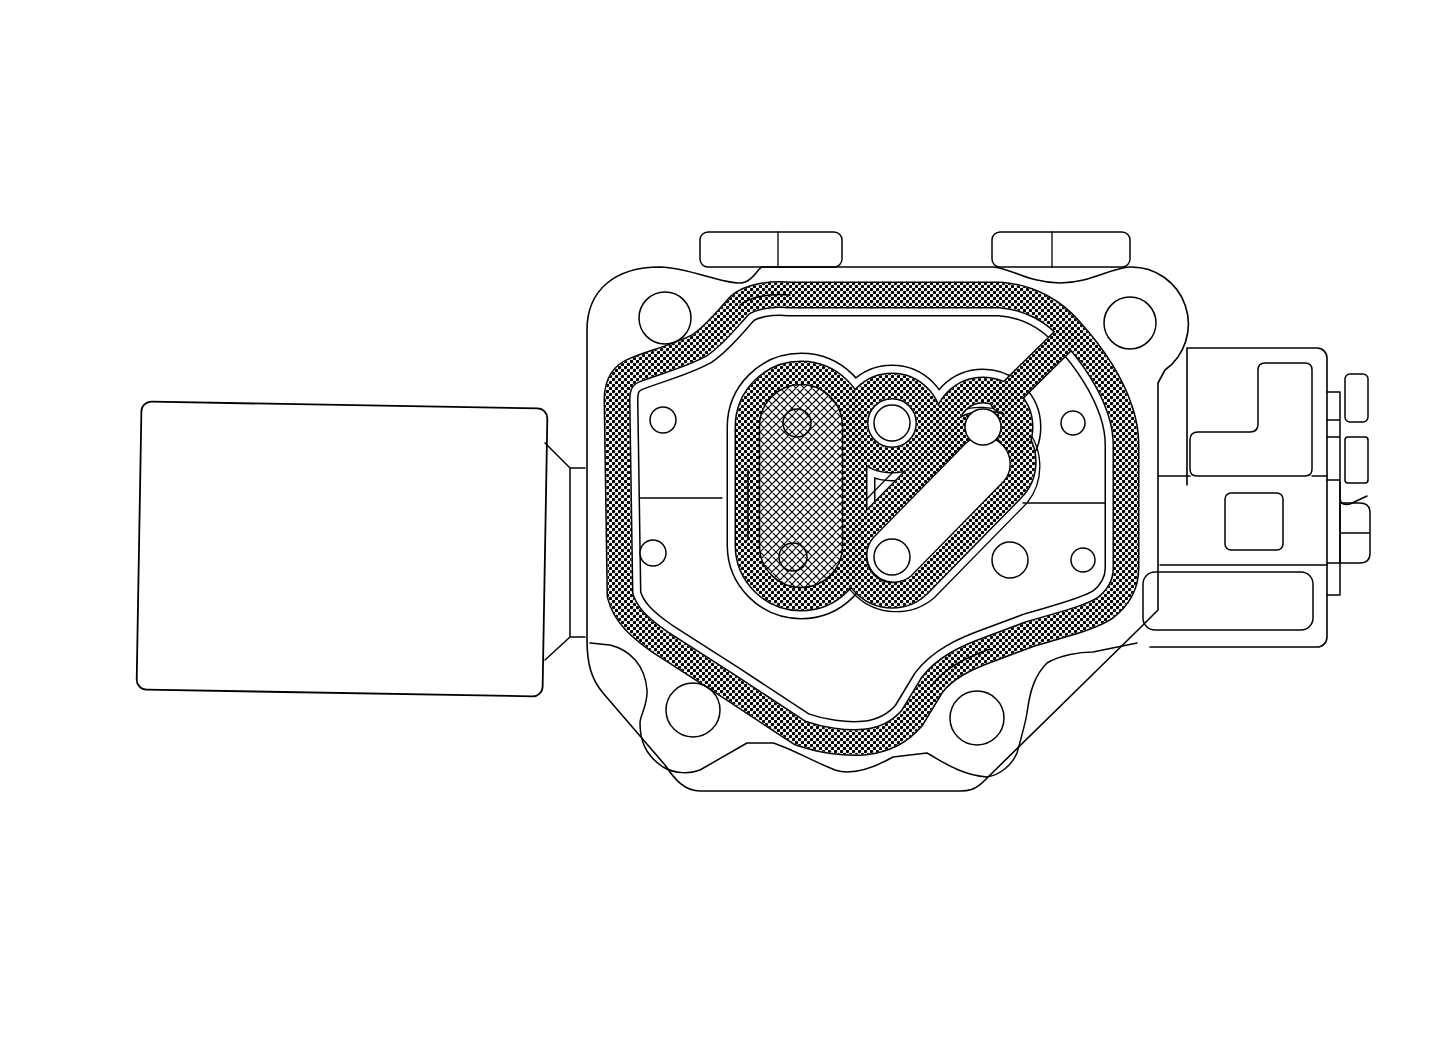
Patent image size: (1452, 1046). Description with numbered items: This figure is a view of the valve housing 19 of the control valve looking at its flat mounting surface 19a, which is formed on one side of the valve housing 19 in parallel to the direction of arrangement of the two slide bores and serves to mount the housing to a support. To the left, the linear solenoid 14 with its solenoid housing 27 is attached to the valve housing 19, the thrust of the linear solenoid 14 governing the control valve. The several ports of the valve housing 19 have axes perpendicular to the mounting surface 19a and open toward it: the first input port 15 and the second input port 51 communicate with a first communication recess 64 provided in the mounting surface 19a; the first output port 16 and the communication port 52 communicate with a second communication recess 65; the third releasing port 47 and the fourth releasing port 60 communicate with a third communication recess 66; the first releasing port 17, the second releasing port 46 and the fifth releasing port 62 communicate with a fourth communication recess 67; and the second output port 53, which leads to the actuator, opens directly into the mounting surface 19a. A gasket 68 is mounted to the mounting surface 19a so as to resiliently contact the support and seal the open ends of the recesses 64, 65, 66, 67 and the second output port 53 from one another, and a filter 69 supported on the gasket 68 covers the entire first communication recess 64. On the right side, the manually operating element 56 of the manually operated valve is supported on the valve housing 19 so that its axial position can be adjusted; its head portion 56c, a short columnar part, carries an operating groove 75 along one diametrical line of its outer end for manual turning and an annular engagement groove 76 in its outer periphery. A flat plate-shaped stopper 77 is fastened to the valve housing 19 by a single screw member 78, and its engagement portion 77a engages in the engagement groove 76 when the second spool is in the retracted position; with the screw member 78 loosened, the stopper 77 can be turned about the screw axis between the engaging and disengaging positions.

The linear solenoid 14 is at (362, 563).
The first input port 15 is at (816, 570).
The first output port 16 is at (881, 562).
The first releasing port 17 is at (1015, 575).
The valve housing 19 is at (620, 693).
The mounting surface 19a is at (672, 320).
The solenoid housing 27 is at (283, 410).
The second releasing port 46 is at (1090, 565).
The third releasing port 47 is at (653, 556).
The second input port 51 is at (826, 412).
The communication port 52 is at (988, 415).
The second output port 53 is at (905, 412).
The manually operating element 56 is at (1353, 366).
The head portion 56c is at (1365, 392).
The fourth releasing port 60 is at (658, 410).
The fifth releasing port 62 is at (1078, 423).
The first communication recess 64 is at (762, 480).
The second communication recess 65 is at (955, 482).
The third communication recess 66 is at (765, 325).
The fourth communication recess 67 is at (958, 630).
The gasket 68 is at (790, 292).
The filter 69 is at (755, 510).
The operating groove 75 is at (1360, 427).
The engagement groove 76 is at (1342, 500).
The stopper 77 is at (1333, 568).
The engagement portion 77a is at (1333, 465).
The screw member 78 is at (1358, 530).